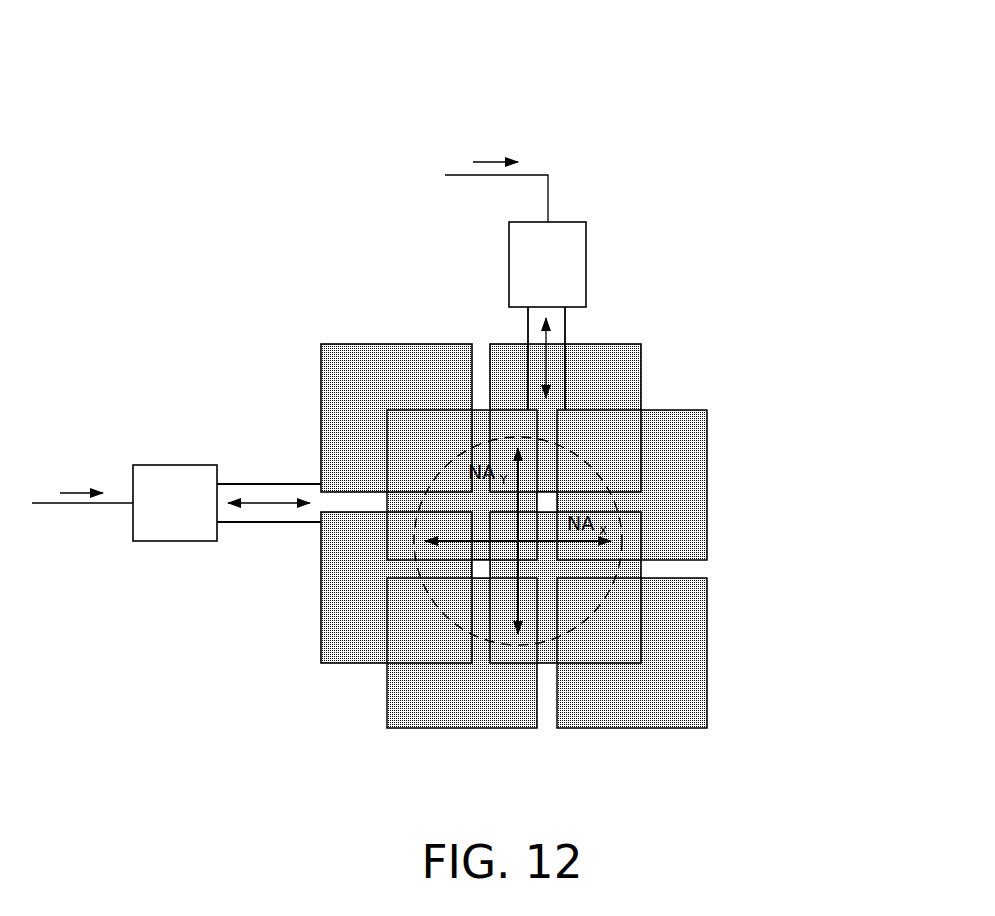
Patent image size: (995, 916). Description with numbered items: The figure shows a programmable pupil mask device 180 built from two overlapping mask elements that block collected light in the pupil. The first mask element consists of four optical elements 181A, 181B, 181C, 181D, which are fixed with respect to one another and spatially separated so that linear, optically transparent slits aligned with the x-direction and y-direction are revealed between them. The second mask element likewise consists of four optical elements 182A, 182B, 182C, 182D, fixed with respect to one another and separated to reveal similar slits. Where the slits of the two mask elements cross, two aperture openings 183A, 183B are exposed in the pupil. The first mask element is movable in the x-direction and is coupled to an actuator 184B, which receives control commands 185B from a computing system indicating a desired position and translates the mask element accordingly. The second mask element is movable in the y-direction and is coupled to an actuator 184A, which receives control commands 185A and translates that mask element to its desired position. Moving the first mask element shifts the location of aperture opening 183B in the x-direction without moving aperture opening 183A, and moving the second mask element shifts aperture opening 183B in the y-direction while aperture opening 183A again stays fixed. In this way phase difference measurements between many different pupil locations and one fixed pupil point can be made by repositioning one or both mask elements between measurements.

The programmable pupil mask device 180 is at (227, 72).
The optical element 181A is at (641, 375).
The optical element 181B is at (641, 568).
The optical element 181C is at (350, 663).
The optical element 181D is at (351, 344).
The optical element 182A is at (707, 495).
The optical element 182B is at (707, 706).
The optical element 182C is at (460, 728).
The optical element 182D is at (420, 410).
The aperture opening 183A is at (553, 498).
The aperture opening 183B is at (487, 569).
The actuator 184A is at (515, 292).
The actuator 184B is at (176, 503).
The control commands 185A is at (490, 162).
The control commands 185B is at (80, 493).